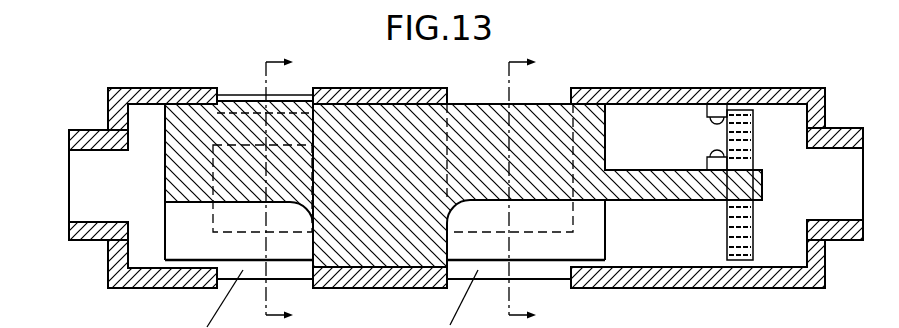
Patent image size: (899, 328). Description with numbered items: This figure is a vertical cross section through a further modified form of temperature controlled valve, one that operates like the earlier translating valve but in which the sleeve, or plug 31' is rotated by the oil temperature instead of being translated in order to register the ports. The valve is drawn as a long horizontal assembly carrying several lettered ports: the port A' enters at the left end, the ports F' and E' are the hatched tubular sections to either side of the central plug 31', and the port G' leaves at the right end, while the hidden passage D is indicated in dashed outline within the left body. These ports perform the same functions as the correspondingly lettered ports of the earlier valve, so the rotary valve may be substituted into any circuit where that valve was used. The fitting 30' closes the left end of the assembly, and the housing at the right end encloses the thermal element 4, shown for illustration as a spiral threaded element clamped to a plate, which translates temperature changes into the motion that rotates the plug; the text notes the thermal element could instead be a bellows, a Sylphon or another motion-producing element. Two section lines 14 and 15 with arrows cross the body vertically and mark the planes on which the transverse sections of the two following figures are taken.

The port A' is at (83, 185).
The end fitting 30' is at (162, 207).
The port F' is at (248, 166).
The hidden passage D is at (240, 213).
The central block 31' is at (380, 170).
The port E' is at (604, 166).
The thermal element 4 is at (754, 148).
The port G' is at (853, 184).
The section line 14- 14 is at (265, 190).
The section line 15- 15 is at (507, 190).